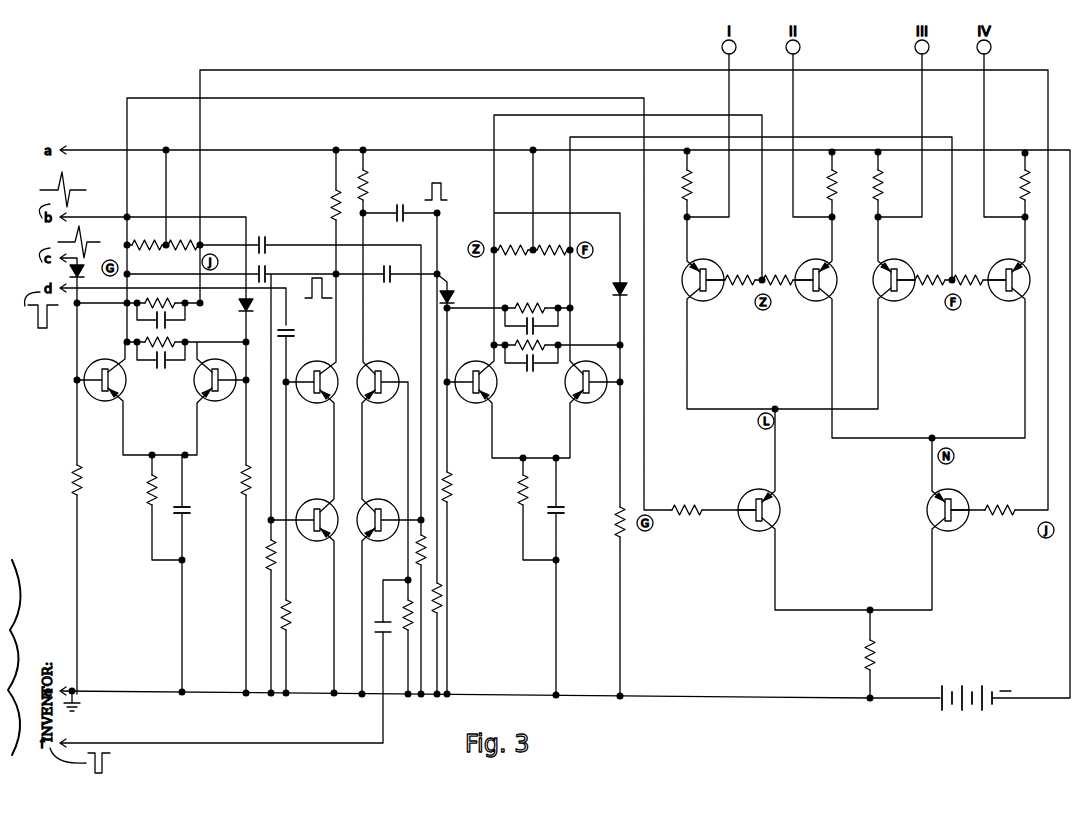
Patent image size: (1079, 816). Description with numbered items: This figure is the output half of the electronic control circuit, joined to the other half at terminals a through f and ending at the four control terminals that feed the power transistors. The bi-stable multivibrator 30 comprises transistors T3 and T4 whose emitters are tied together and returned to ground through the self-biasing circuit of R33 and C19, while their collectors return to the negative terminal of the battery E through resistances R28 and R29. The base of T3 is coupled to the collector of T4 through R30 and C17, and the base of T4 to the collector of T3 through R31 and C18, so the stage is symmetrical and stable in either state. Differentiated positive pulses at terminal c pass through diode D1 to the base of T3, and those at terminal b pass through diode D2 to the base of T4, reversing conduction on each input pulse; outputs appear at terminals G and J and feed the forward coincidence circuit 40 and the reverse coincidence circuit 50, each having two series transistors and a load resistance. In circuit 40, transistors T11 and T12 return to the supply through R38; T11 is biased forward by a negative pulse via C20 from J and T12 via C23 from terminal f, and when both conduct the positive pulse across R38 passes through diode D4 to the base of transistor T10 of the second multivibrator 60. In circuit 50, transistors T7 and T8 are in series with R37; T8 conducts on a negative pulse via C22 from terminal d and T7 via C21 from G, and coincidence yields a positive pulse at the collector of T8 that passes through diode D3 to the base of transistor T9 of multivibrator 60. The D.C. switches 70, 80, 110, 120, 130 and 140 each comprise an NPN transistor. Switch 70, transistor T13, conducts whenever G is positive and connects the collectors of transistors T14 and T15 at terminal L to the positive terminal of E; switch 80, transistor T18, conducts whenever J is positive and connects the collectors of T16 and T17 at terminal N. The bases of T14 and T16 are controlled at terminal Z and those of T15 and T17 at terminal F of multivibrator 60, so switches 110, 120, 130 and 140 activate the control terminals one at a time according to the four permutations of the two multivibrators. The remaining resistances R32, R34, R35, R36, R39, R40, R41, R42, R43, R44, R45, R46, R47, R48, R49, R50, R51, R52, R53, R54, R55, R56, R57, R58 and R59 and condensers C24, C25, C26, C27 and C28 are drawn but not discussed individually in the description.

The bi-stable multivibrator 30 is at (160, 392).
The forward coincidence circuit 40 is at (379, 460).
The reverse coincidence circuit 50 is at (317, 460).
The second bi-stable multivibrator 60 is at (531, 393).
The D.C. switch 70 is at (755, 530).
The D.C. switch 80 is at (948, 530).
The D.C. switch 110 is at (703, 305).
The D.C. switch 120 is at (813, 305).
The D.C. switch 130 is at (894, 305).
The D.C. switch 140 is at (1004, 305).
The transistor T3 is at (105, 388).
The transistor T4 is at (215, 388).
The transistor T7 is at (317, 529).
The transistor T8 is at (317, 391).
The transistor T9 is at (476, 391).
The transistor T10 is at (586, 391).
The transistor T11 is at (378, 529).
The transistor T12 is at (379, 391).
The transistor T13 is at (755, 518).
The transistor T14 is at (703, 290).
The transistor T15 is at (894, 290).
The transistor T16 is at (813, 290).
The transistor T17 is at (1007, 290).
The transistor T18 is at (966, 571).
The diode D1 is at (65, 272).
The diode D2 is at (233, 307).
The diode D3 is at (457, 291).
The diode D4 is at (606, 298).
The resistance R28 is at (147, 255).
The resistance R29 is at (183, 237).
The resistance R30 is at (148, 309).
The resistance R31 is at (144, 340).
The resistor R32 is at (56, 480).
The self-biasing resistance R33 is at (134, 490).
The resistor R34 is at (230, 480).
The resistor R35 is at (261, 553).
The resistor R36 is at (300, 615).
The load resistance R37 is at (320, 205).
The load resistance R38 is at (380, 183).
The resistor R39 is at (398, 629).
The resistor R40 is at (425, 553).
The resistor R41 is at (440, 599).
The resistor R42 is at (462, 487).
The resistor R43 is at (508, 496).
The resistor R44 is at (513, 240).
The resistor R45 is at (550, 260).
The resistor R46 is at (528, 300).
The resistor R47 is at (502, 342).
The resistor R48 is at (602, 522).
The resistor R49 is at (850, 655).
The resistor R50 is at (688, 502).
The resistor R51 is at (999, 502).
The resistor R52 is at (740, 270).
The resistor R53 is at (778, 270).
The resistor R54 is at (930, 270).
The resistor R55 is at (968, 270).
The resistor R56 is at (702, 185).
The resistor R57 is at (818, 185).
The resistor R58 is at (893, 185).
The resistor R59 is at (1009, 185).
The condenser C17 is at (168, 323).
The condenser C18 is at (163, 370).
The condenser C19 is at (198, 508).
The condenser C20 is at (277, 240).
The condenser C21 is at (278, 268).
The condenser C22 is at (300, 332).
The condenser C23 is at (375, 633).
The capacitor C24 is at (390, 205).
The capacitor C25 is at (387, 266).
The capacitor C26 is at (531, 324).
The capacitor C27 is at (532, 362).
The capacitor C28 is at (570, 505).
The battery E is at (965, 684).